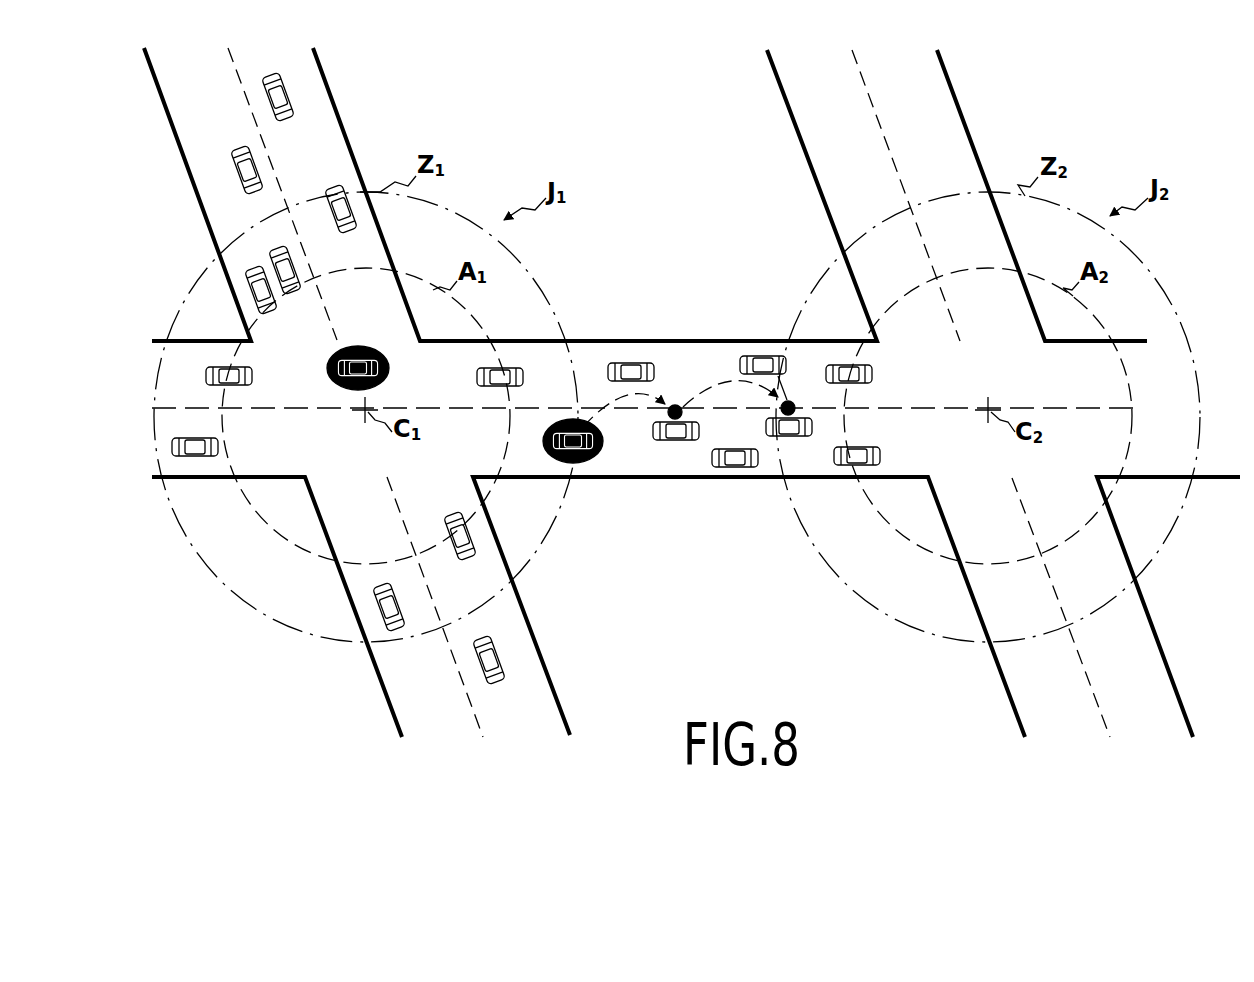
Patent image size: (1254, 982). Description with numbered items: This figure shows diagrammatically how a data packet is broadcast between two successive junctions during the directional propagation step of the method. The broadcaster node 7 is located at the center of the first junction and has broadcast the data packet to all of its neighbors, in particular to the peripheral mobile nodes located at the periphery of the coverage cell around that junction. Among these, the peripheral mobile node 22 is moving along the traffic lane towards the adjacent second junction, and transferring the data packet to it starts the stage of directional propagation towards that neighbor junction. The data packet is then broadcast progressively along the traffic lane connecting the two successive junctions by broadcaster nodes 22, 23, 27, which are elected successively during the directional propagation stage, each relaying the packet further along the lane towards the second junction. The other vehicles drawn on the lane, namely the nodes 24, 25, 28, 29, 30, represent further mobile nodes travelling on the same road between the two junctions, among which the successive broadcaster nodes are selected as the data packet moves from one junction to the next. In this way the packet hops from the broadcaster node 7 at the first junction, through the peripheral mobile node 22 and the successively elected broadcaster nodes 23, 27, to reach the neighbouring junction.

The broadcaster node 7 is at (328, 366).
The peripheral mobile node 22 is at (566, 462).
The broadcaster node 23 is at (673, 441).
The surrounding vehicle 24 is at (640, 360).
The surrounding vehicle 25 is at (728, 468).
The broadcaster node 27 is at (788, 437).
The surrounding vehicle 28 is at (765, 355).
The surrounding vehicle 29 is at (873, 450).
The surrounding vehicle 30 is at (831, 366).